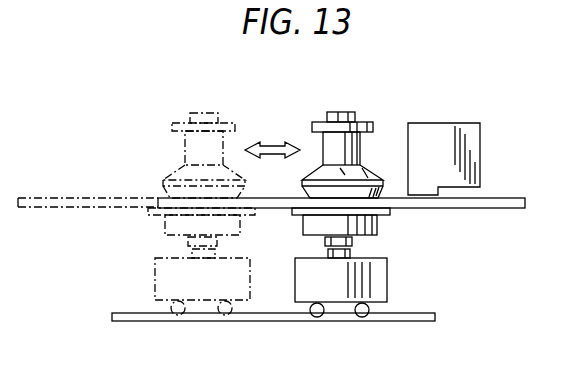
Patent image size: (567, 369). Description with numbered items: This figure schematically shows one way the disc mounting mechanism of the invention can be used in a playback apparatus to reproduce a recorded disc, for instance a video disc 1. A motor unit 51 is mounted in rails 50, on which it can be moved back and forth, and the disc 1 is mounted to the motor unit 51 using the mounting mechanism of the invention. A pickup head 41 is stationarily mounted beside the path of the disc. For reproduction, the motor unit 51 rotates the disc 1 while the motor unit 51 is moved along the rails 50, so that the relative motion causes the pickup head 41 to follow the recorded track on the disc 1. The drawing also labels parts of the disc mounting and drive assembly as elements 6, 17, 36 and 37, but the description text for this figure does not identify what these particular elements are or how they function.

The video disc 1 is at (514, 198).
The cutter holder 6 is at (378, 226).
The cutter flange 17 is at (364, 121).
The cutter shaft 36 is at (361, 145).
The cap nut 37 is at (340, 112).
The pickup head 41 is at (440, 123).
The rails 50 is at (423, 321).
The motor unit 51 is at (388, 278).